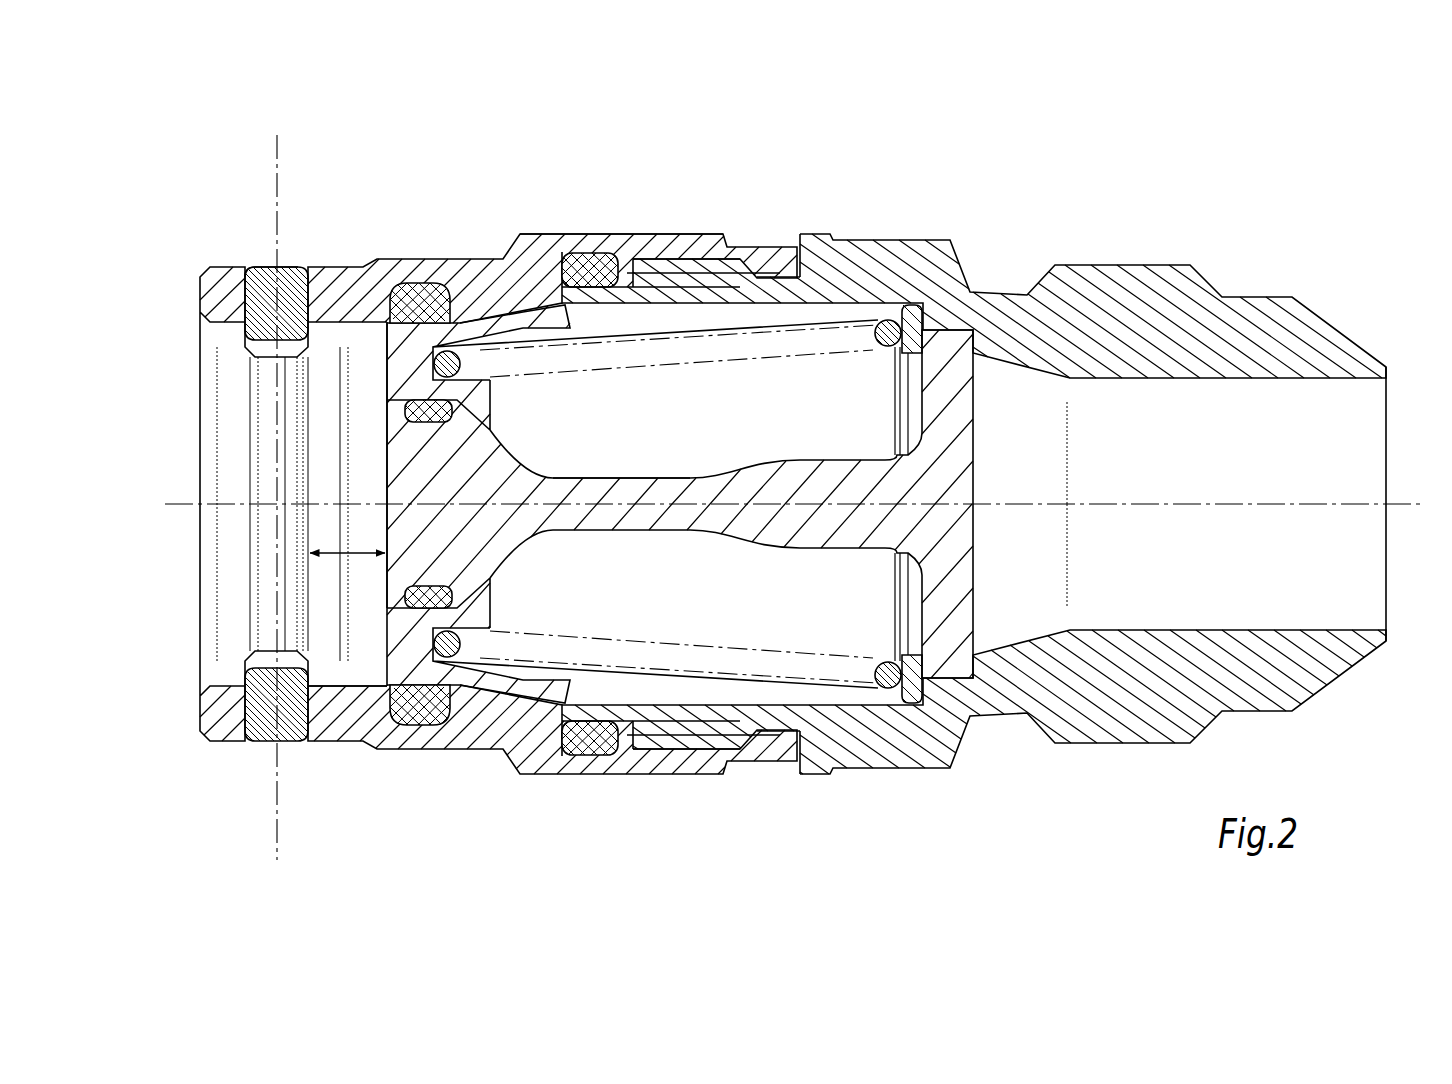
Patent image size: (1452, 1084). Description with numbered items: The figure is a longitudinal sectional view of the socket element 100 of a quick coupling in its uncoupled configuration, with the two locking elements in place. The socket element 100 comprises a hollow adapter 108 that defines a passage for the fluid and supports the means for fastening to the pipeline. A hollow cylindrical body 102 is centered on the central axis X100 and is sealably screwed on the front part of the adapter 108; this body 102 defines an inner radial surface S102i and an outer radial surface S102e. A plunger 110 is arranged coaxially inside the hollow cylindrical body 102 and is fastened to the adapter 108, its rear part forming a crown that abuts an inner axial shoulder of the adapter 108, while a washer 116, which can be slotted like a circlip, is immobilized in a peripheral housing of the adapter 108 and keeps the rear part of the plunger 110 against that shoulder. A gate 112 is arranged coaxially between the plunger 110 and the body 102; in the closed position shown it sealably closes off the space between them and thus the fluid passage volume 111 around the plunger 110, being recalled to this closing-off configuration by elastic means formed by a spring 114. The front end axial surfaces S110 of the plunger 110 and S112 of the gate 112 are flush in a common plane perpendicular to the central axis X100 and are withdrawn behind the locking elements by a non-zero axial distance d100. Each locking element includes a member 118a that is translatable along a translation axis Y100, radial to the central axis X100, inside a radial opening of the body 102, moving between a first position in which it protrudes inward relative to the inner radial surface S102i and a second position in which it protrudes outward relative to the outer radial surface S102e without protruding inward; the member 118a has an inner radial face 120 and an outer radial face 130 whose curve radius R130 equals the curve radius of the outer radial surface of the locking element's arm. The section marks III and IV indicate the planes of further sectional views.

The socket element 100 is at (1282, 261).
The hollow cylindrical body 102 is at (663, 776).
The hollow adapter 108 is at (1118, 318).
The plunger 110 is at (483, 468).
The fluid passage volume 111 is at (655, 443).
The gate 112 is at (490, 746).
The spring 114 is at (769, 762).
The washer 116 is at (908, 702).
The member 118a is at (265, 261).
The inner radial face 120 is at (283, 665).
The outer radial face 130 is at (265, 746).
The curve radius of the outer face R130 is at (285, 262).
The front end axial surface of the plunger S110 is at (379, 427).
The front end axial surface of the gate S112 is at (379, 354).
The outer radial surface S102e is at (667, 230).
The inner radial surface S102i is at (373, 681).
The axial distance d100 is at (347, 543).
The central axis X100 is at (792, 493).
The translation axis Y100 is at (290, 481).
The section line III is at (178, 502).
The section line IV is at (275, 197).